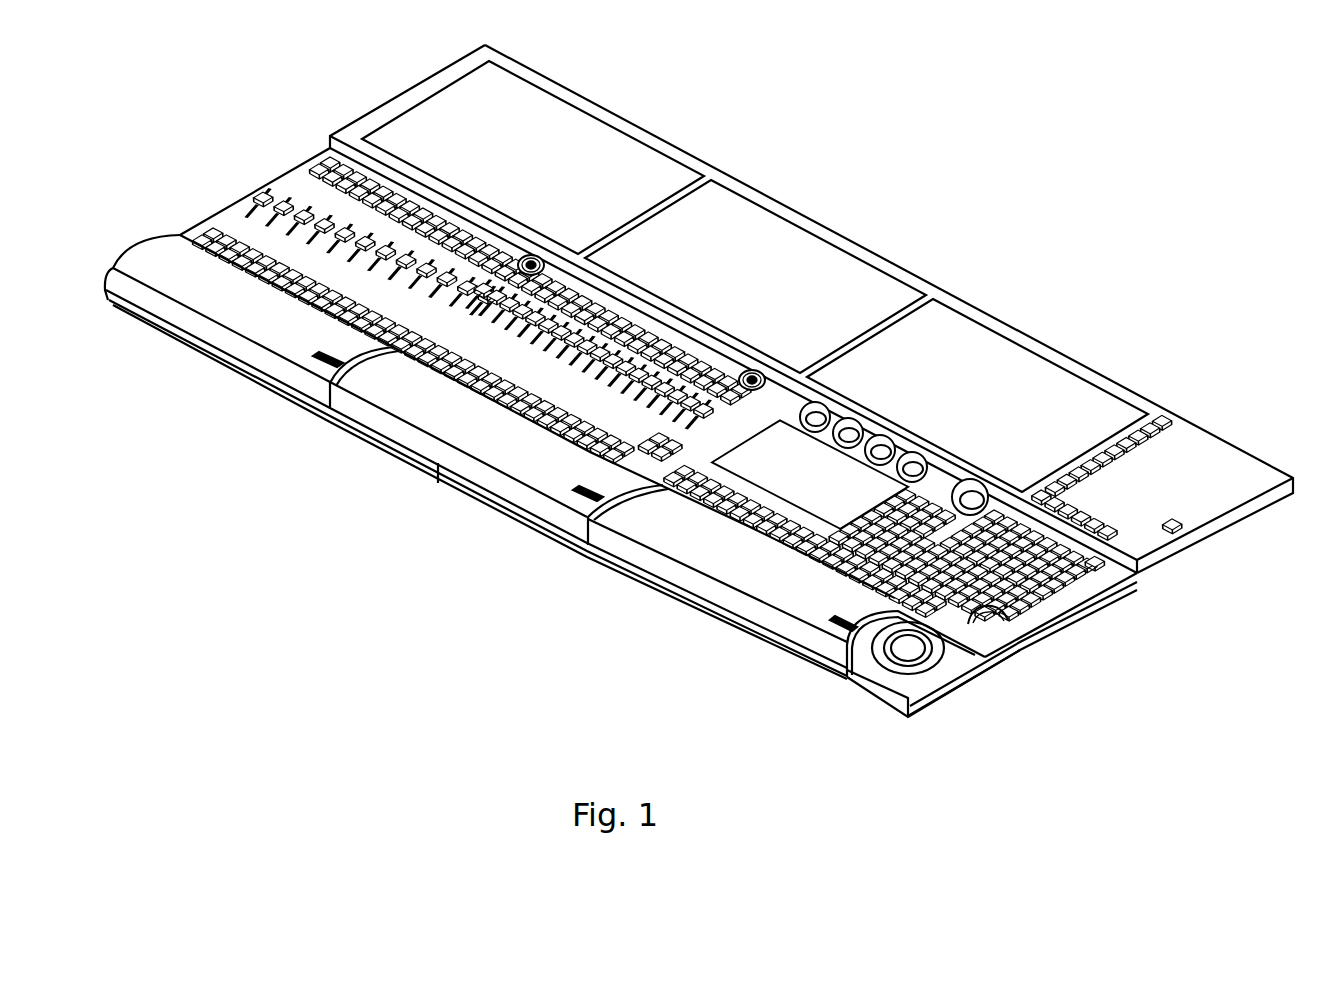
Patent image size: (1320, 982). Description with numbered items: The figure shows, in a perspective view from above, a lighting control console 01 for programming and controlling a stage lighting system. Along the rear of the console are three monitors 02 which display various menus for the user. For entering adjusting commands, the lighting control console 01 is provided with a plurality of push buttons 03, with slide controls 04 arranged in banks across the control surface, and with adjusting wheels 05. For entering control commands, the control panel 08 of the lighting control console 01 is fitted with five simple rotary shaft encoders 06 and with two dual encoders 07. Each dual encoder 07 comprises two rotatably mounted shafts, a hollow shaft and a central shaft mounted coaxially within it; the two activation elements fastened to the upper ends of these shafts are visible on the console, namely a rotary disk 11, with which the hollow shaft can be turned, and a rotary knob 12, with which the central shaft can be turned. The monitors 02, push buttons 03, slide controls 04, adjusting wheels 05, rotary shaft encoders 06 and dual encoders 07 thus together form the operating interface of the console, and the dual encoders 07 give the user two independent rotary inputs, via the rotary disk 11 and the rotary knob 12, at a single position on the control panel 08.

The lighting control console 01 is at (1003, 125).
The monitors 02 is at (613, 155).
The push buttons 03 is at (1098, 566).
The slide controls 04 is at (264, 190).
The adjusting wheels 05 is at (990, 626).
The simple rotary shaft encoders 06 is at (880, 470).
The dual encoders 07 is at (547, 240).
The control panel 08 is at (604, 337).
The rotary disk 11 is at (528, 256).
The rotary knob 12 is at (546, 257).